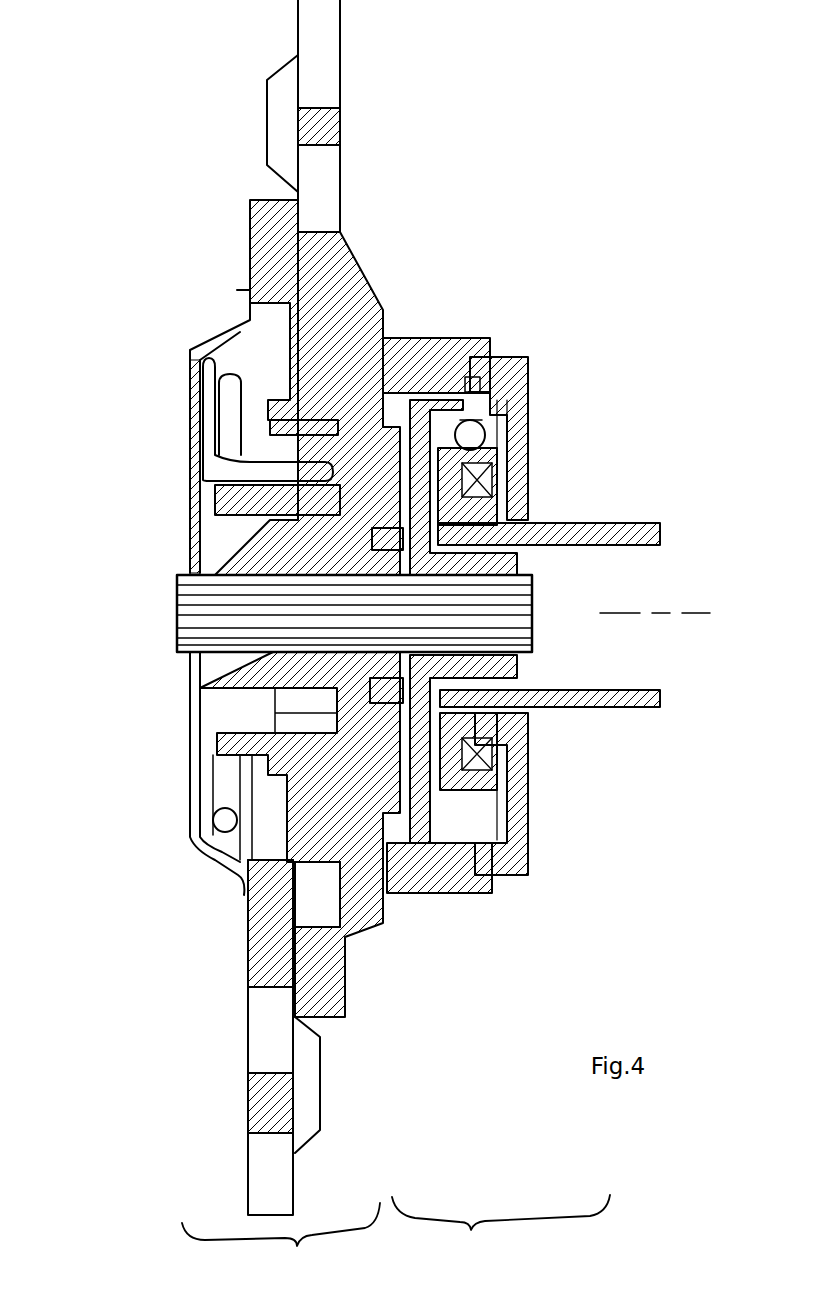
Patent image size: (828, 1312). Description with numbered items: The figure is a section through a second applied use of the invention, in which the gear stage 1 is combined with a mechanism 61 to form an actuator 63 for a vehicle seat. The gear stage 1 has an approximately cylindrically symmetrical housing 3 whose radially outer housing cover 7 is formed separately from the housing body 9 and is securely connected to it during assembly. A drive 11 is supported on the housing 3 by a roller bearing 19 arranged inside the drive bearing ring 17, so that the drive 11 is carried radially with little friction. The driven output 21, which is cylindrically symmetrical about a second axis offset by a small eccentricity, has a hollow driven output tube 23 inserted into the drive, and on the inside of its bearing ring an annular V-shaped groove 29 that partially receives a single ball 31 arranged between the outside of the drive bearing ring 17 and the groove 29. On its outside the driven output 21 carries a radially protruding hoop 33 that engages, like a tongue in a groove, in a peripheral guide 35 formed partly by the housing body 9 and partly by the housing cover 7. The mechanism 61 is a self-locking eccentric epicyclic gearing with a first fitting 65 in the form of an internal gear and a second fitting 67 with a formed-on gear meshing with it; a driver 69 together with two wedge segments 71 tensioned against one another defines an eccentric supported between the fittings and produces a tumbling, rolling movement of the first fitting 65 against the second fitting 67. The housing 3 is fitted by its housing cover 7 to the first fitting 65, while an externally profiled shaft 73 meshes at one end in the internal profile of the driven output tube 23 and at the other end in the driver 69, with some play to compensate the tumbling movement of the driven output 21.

The gear stage 1 is at (501, 1229).
The housing 3 is at (540, 380).
The housing cover 7 is at (428, 352).
The housing body 9 is at (523, 820).
The drive 11 is at (582, 522).
The drive bearing ring 17 is at (480, 450).
The roller bearing 19 is at (483, 763).
The driven output 21 is at (532, 563).
The driven output tube 23 is at (487, 668).
The groove 29 is at (470, 425).
The ball 31 is at (470, 433).
The hoop 33 is at (452, 387).
The guide 35 is at (470, 380).
The mechanism 61 is at (281, 1236).
The actuator 63 is at (196, 1115).
The first fitting 65 is at (363, 345).
The second fitting 67 is at (272, 950).
The driver 69 is at (233, 713).
The wedge segments 71 is at (290, 443).
The shaft 73 is at (267, 607).